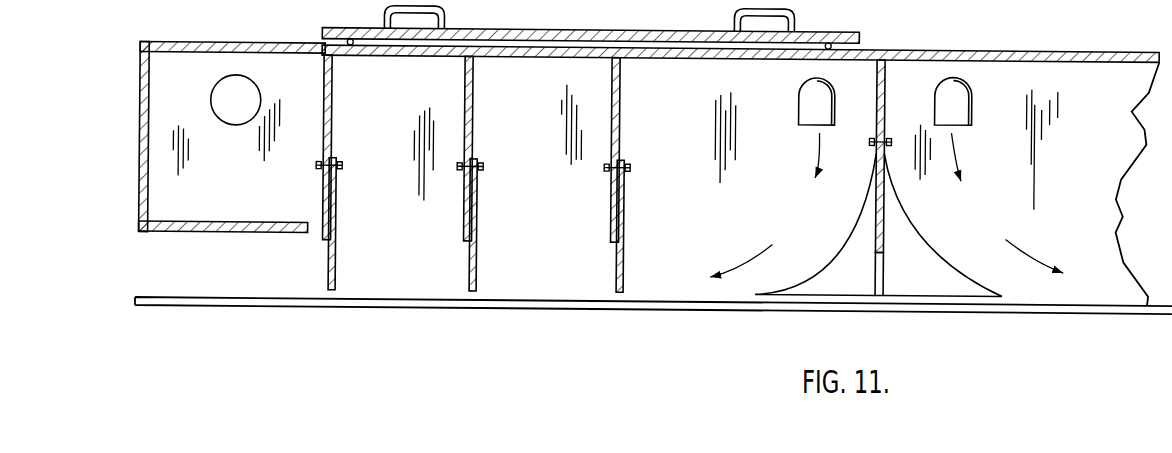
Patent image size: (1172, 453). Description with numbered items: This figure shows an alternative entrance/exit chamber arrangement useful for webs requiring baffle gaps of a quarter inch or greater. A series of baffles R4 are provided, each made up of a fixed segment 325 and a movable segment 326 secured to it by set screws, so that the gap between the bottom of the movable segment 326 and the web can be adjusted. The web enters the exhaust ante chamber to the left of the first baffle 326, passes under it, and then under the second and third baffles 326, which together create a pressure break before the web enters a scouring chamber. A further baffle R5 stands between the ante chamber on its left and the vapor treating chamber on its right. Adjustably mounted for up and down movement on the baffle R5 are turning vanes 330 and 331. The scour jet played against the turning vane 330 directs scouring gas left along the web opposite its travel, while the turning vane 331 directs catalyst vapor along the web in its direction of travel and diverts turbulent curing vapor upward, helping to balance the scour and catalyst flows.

The baffle R4 is at (617, 112).
The baffle R5 is at (883, 110).
The fixed segment 325 is at (615, 140).
The movable segment 326 is at (623, 211).
The turning vane 330 is at (848, 212).
The turning vane 331 is at (922, 226).